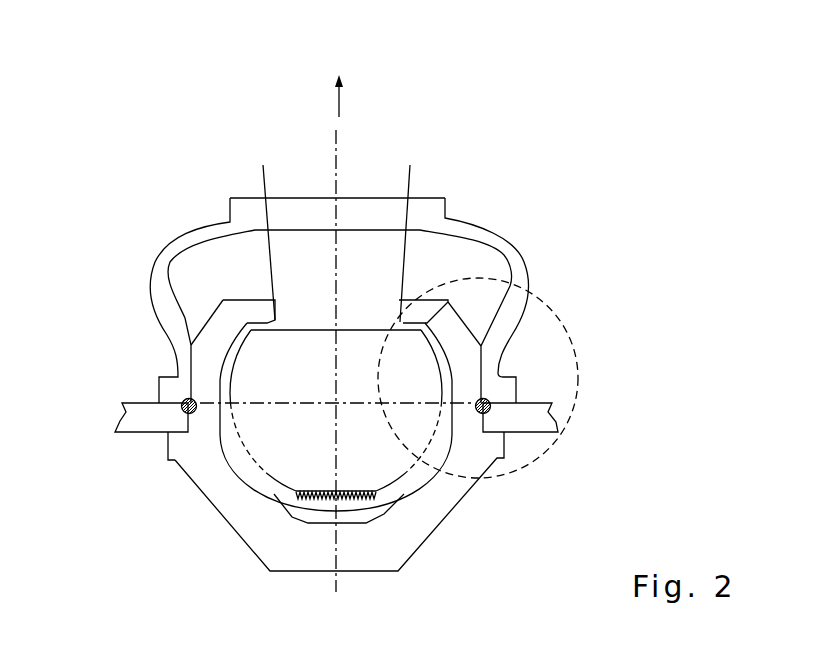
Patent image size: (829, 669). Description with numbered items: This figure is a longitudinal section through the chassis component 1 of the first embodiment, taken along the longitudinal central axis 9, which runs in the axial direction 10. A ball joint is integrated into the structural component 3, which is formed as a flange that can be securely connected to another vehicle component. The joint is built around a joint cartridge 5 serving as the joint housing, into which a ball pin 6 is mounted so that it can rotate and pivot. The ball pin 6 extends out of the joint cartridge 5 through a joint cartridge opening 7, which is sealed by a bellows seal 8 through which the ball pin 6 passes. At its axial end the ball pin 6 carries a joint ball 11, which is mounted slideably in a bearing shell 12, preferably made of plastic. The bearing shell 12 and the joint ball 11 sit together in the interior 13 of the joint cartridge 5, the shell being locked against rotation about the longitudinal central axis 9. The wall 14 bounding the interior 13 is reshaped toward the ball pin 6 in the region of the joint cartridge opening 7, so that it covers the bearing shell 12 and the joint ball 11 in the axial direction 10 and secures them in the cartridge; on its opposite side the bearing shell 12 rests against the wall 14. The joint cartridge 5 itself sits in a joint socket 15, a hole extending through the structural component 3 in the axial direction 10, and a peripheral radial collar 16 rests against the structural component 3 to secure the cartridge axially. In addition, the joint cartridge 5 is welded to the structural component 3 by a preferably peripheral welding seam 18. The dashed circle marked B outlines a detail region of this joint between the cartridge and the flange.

The chassis component 1 is at (116, 68).
The structural component 3 is at (140, 427).
The joint cartridge 5 is at (418, 540).
The ball pin 6 is at (263, 178).
The joint cartridge opening 7 is at (253, 307).
The bellows seal 8 is at (158, 265).
The longitudinal central axis 9 is at (335, 580).
The axial direction 10 is at (337, 100).
The joint ball 11 is at (265, 458).
The bearing shell 12 is at (287, 495).
The interior 13 is at (310, 518).
The wall 14 is at (217, 323).
The joint socket 15 is at (483, 423).
The collar 16 is at (176, 446).
The welding seam 18 is at (182, 404).
The detail region B is at (565, 323).